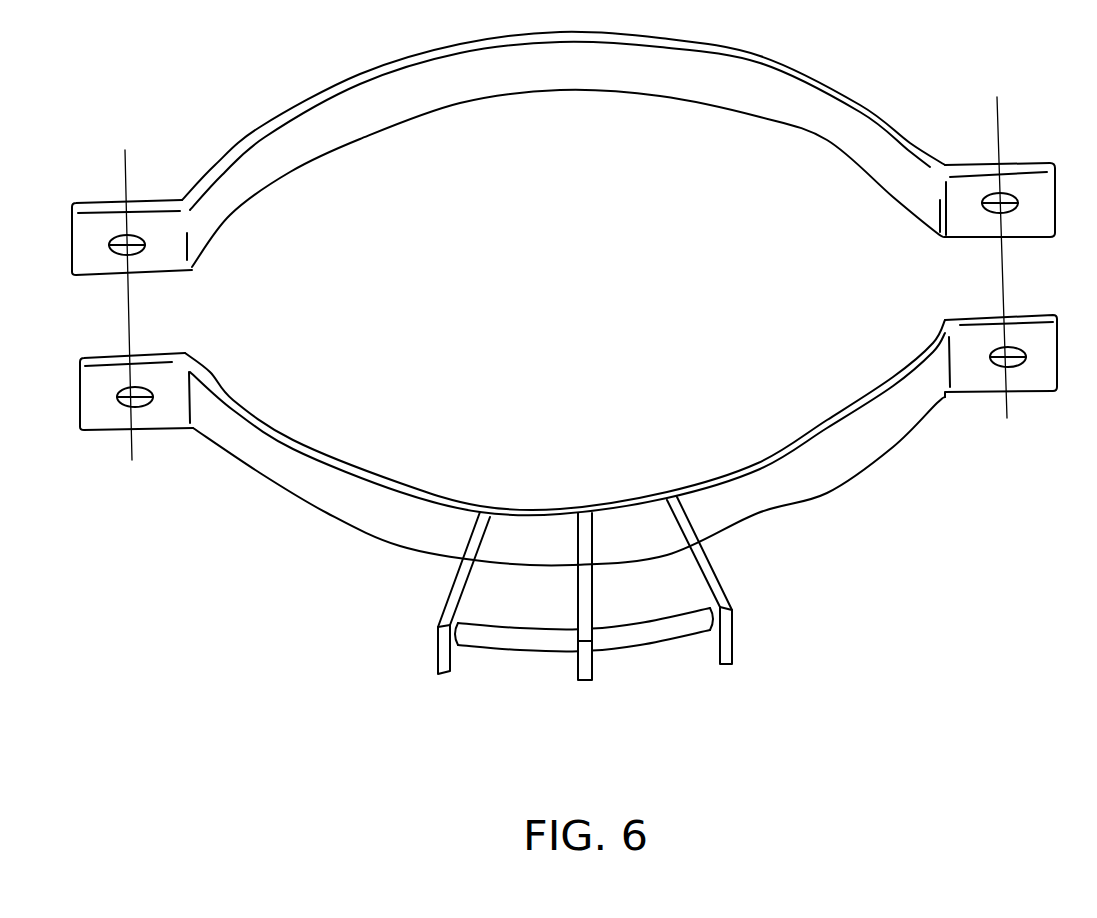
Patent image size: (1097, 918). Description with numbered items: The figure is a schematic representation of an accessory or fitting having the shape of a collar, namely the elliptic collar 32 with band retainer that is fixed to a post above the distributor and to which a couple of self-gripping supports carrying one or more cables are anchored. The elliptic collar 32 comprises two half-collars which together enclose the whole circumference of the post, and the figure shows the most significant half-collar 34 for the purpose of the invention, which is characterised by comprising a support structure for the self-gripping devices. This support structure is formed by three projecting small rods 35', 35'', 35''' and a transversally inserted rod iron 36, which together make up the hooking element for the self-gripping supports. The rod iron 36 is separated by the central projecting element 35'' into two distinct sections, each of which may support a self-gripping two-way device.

The elliptic collar 32 is at (217, 102).
The half-collar 34 is at (813, 492).
The projecting small rod 35' is at (413, 630).
The central projecting element 35'' is at (616, 628).
The projecting small rod 35''' is at (753, 612).
The rod iron 36 is at (522, 645).